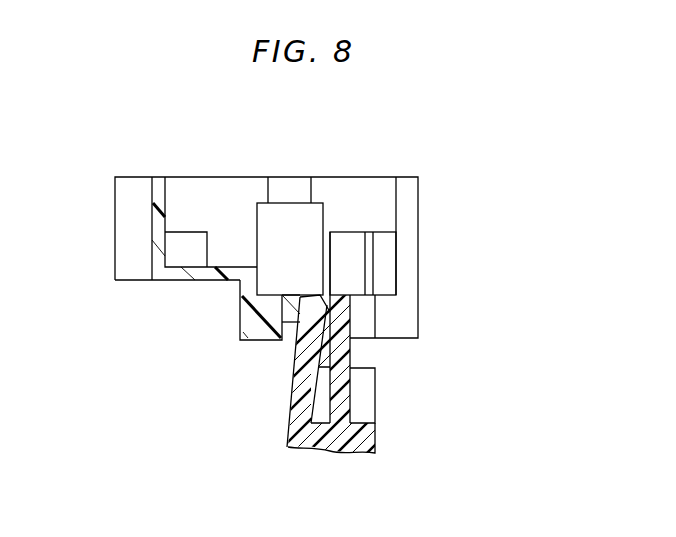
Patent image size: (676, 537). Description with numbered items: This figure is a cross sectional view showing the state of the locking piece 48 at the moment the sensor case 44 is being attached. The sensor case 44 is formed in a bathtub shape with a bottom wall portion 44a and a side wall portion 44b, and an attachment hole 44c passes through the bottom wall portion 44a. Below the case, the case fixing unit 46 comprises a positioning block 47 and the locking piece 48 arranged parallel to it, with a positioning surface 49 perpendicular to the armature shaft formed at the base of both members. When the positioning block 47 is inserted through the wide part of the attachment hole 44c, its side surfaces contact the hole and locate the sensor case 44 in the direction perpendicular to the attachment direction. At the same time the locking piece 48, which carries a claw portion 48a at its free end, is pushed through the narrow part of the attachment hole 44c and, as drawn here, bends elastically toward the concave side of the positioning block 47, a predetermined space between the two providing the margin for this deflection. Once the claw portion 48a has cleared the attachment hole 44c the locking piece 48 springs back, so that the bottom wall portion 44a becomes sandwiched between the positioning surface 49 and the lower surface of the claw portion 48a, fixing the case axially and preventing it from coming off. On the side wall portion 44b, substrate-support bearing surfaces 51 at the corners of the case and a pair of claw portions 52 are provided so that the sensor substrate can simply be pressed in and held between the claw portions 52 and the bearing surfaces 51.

The sensor case 44 is at (422, 186).
The bottom wall portion 44a is at (253, 320).
The side wall portion 44b is at (203, 202).
The attachment hole 44c is at (287, 342).
The case fixing unit 46 is at (391, 410).
The positioning block 47 is at (353, 353).
The locking piece 48 is at (292, 378).
The claw portion 48a is at (300, 295).
The positioning surface 49 is at (368, 360).
The substrate-support bearing surface 51 is at (155, 210).
The claw portion 52 is at (285, 182).